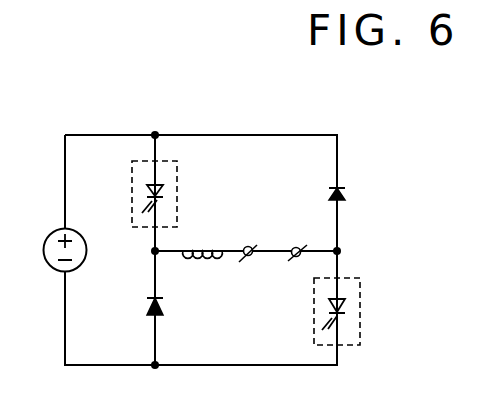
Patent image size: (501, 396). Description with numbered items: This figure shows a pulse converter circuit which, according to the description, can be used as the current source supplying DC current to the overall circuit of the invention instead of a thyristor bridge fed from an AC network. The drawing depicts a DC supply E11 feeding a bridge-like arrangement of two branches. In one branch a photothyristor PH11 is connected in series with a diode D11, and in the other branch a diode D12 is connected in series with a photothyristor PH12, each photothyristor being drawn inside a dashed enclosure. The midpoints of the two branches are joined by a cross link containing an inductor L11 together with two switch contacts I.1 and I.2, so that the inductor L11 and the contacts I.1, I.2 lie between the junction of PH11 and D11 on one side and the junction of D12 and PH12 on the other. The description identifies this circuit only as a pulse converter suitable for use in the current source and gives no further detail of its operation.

The DC voltage source E11 is at (43, 248).
The photothyristor PH11 is at (176, 205).
The photothyristor PH12 is at (360, 310).
The diode D11 is at (165, 312).
The diode D12 is at (347, 198).
The inductor L11 is at (228, 237).
The switch I.1 is at (247, 233).
The switch I.2 is at (317, 237).